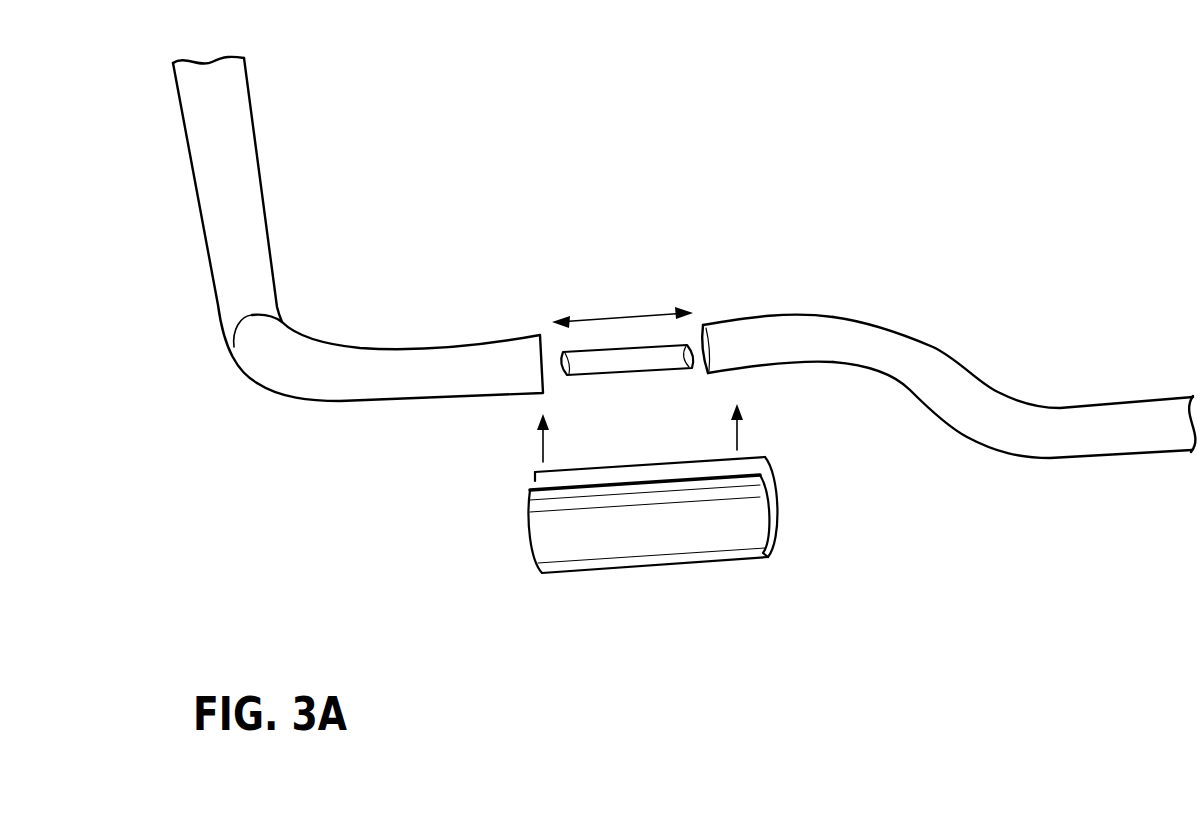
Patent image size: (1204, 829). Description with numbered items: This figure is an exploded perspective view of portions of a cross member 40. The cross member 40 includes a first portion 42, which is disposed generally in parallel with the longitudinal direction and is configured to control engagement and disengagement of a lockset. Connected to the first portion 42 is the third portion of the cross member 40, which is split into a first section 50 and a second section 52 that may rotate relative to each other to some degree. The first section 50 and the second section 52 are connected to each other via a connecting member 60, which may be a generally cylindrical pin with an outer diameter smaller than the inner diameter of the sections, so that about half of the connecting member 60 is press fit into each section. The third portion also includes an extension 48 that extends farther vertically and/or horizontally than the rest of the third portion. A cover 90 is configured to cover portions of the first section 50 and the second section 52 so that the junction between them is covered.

The cross member 40 is at (836, 121).
The first portion 42 is at (262, 131).
The extension 48 is at (1127, 440).
The first section 50 is at (453, 350).
The second section 52 is at (762, 323).
The connecting member 60 is at (625, 357).
The cover 90 is at (685, 555).